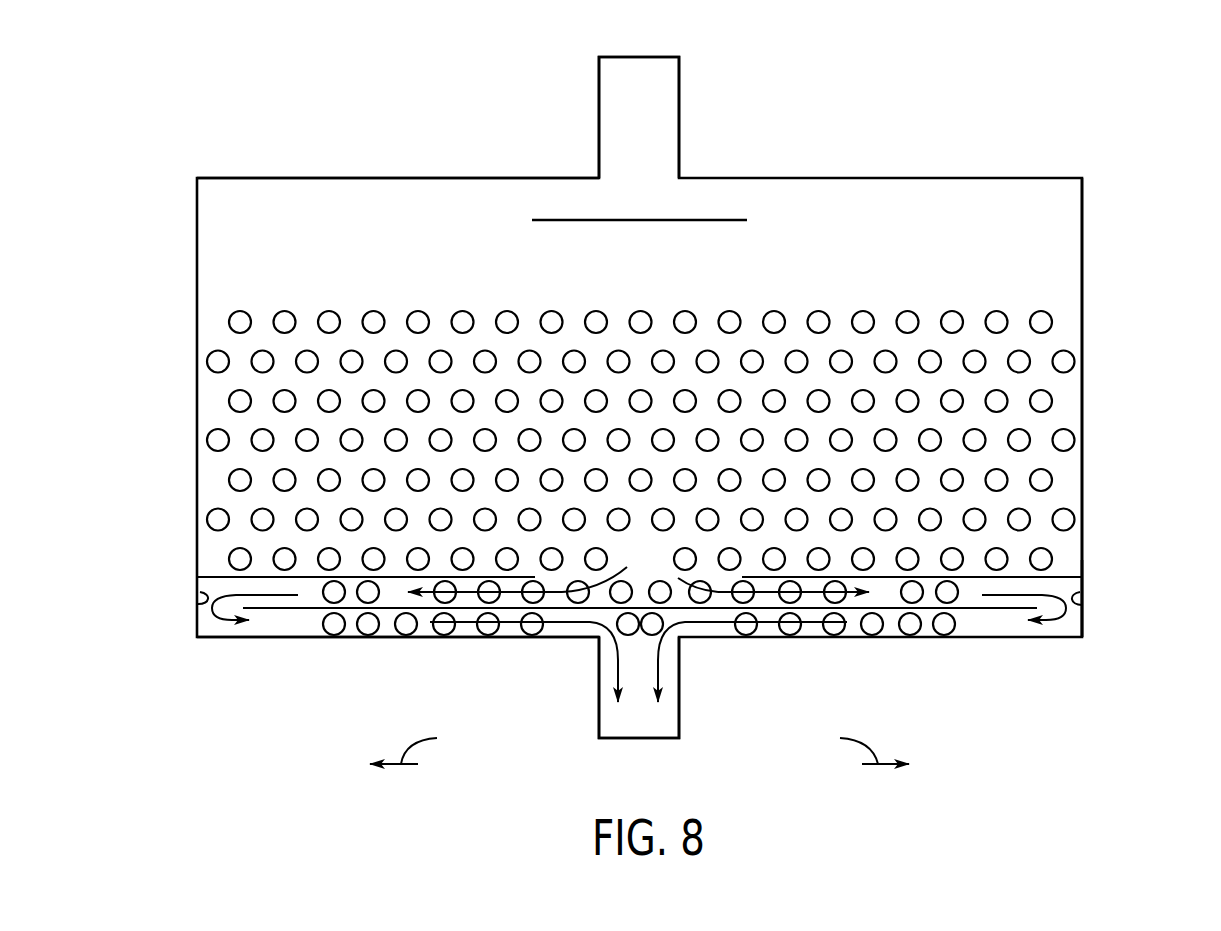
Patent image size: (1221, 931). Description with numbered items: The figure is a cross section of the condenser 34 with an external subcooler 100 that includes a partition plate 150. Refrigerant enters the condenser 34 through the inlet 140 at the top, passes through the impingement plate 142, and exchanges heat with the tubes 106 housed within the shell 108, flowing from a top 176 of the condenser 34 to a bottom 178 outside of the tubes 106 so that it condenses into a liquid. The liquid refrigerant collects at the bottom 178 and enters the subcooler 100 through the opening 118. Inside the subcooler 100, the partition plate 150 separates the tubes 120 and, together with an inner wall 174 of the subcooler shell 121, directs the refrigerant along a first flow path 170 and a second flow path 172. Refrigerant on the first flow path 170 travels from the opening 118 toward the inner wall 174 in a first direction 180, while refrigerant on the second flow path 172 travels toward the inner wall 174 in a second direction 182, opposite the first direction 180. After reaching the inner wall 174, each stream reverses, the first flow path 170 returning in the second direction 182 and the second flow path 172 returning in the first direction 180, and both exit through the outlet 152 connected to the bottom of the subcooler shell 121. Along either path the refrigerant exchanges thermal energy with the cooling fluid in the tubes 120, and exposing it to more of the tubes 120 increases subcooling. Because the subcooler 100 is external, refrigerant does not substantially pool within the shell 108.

The condenser 34 is at (896, 150).
The subcooler 100 is at (480, 656).
The tubes 106 is at (1065, 352).
The shell 108 is at (397, 177).
The opening 118 is at (667, 580).
The tubes 120 is at (334, 636).
The subcooler shell 121 is at (916, 636).
The inlet 140 is at (638, 57).
The impingement plate 142 is at (707, 220).
The partition plate 150 is at (980, 608).
The outlet 152 is at (640, 738).
The first flow path 170 is at (716, 592).
The second flow path 172 is at (236, 595).
The inner wall 174 is at (1082, 605).
The top 176 is at (1106, 214).
The bottom 178 is at (1108, 571).
The first direction 180 is at (853, 744).
The second direction 182 is at (424, 744).